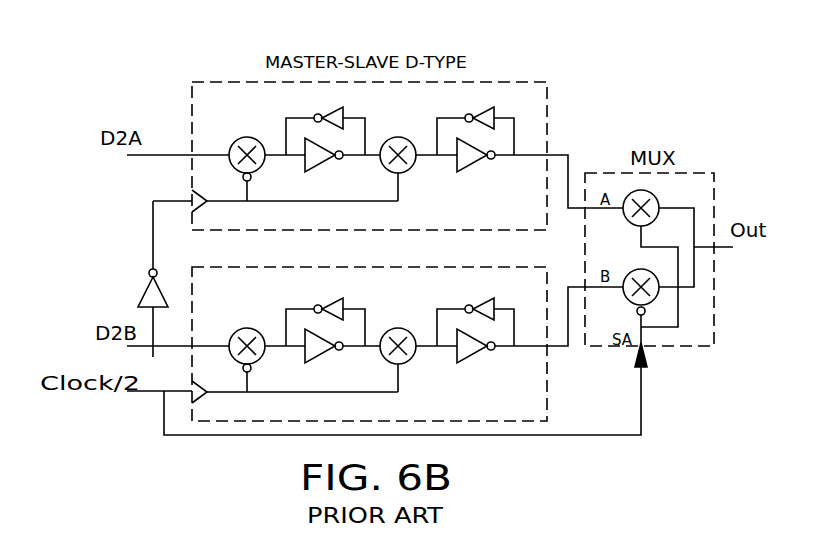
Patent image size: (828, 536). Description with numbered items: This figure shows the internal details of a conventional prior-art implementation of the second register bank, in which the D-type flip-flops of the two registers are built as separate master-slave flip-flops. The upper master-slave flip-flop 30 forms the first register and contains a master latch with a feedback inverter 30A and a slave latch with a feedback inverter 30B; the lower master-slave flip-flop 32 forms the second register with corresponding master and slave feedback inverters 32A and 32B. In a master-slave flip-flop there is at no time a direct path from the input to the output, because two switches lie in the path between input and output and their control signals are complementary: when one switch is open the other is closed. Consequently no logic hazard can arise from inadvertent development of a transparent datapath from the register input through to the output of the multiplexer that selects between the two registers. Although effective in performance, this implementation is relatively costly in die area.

The master-slave D-type flip-flop R2A 30 is at (356, 130).
The master latch feedback inverter 30A is at (325, 123).
The slave latch feedback inverter 30B is at (475, 123).
The master-slave D-type flip-flop R2B 32 is at (358, 324).
The master latch feedback inverter 32A is at (325, 315).
The slave latch feedback inverter 32B is at (475, 315).